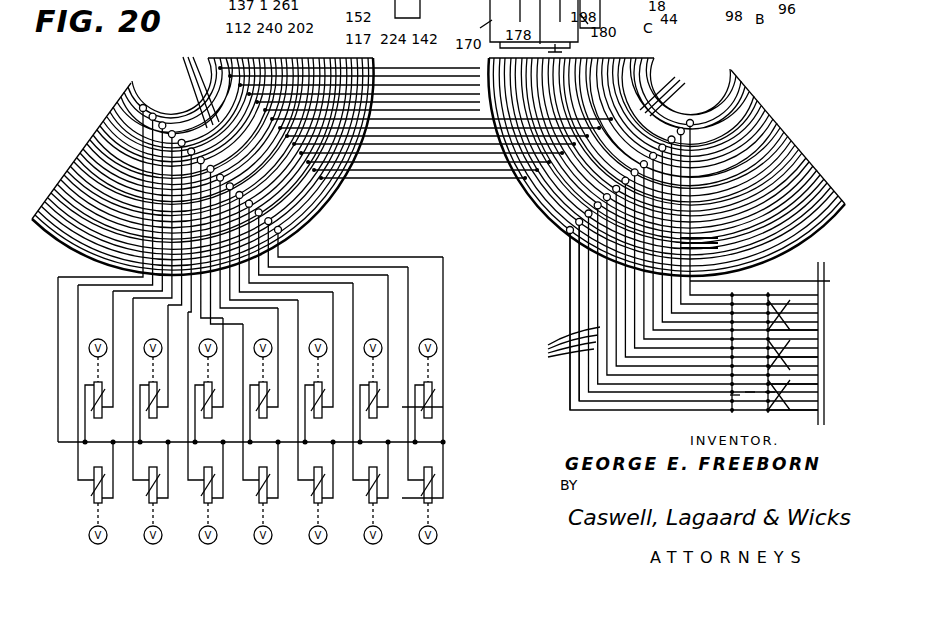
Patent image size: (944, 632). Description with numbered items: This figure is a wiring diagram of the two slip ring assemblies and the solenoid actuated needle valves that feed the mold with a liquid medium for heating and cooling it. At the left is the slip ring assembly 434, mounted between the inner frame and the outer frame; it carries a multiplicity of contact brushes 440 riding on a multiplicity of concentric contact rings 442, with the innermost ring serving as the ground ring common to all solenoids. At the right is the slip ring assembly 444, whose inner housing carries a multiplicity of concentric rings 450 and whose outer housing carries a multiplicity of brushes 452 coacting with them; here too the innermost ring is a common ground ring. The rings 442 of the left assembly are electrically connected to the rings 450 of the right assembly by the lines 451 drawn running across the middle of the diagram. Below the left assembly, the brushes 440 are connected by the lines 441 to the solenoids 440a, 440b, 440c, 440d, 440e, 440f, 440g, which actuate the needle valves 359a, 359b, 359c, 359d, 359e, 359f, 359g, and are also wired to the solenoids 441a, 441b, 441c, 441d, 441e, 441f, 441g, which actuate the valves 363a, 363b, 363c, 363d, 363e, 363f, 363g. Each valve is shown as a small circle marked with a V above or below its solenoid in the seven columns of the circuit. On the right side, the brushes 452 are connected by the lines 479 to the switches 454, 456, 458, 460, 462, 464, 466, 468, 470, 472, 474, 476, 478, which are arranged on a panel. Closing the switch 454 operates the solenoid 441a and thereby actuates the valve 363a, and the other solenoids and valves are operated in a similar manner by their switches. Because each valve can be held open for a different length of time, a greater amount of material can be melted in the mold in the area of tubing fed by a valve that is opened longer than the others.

The slip ring assembly 434 is at (94, 131).
The slip ring assembly 444 is at (749, 92).
The contact brushes 440 is at (153, 113).
The lines 441 is at (130, 283).
The concentric contact rings 442 is at (345, 178).
The concentric rings 450 is at (518, 202).
The lines 451 is at (436, 98).
The brushes 452 is at (681, 120).
The switch 454 is at (738, 300).
The switch 456 is at (733, 300).
The switch 458 is at (768, 305).
The switch 460 is at (824, 266).
The switch 462 is at (818, 328).
The switch 464 is at (818, 355).
The switch 466 is at (818, 383).
The switch 468 is at (818, 410).
The switch 470 is at (590, 400).
The switch 472 is at (640, 400).
The switch 474 is at (737, 393).
The switch 476 is at (771, 398).
The switch 478 is at (750, 396).
The lines 479 is at (627, 296).
The needle valve 359a is at (89, 349).
The needle valve 359b is at (146, 342).
The needle valve 359c is at (200, 343).
The needle valve 359d is at (275, 320).
The needle valve 359e is at (331, 316).
The needle valve 359f is at (385, 312).
The needle valve 359g is at (437, 346).
The solenoid 440a is at (90, 412).
The solenoid 440b is at (182, 429).
The solenoid 440c is at (237, 429).
The solenoid 440d is at (292, 429).
The solenoid 440e is at (343, 432).
The solenoid 440f is at (402, 432).
The solenoid 440g is at (483, 416).
The solenoid 441a is at (92, 490).
The solenoid 441b is at (148, 498).
The solenoid 441c is at (203, 498).
The solenoid 441d is at (258, 498).
The solenoid 441e is at (313, 498).
The solenoid 441f is at (368, 498).
The solenoid 441g is at (423, 498).
The valve 363a is at (89, 538).
The valve 363b is at (144, 538).
The valve 363c is at (199, 538).
The valve 363d is at (256, 538).
The valve 363e is at (328, 556).
The valve 363f is at (382, 537).
The valve 363g is at (437, 535).